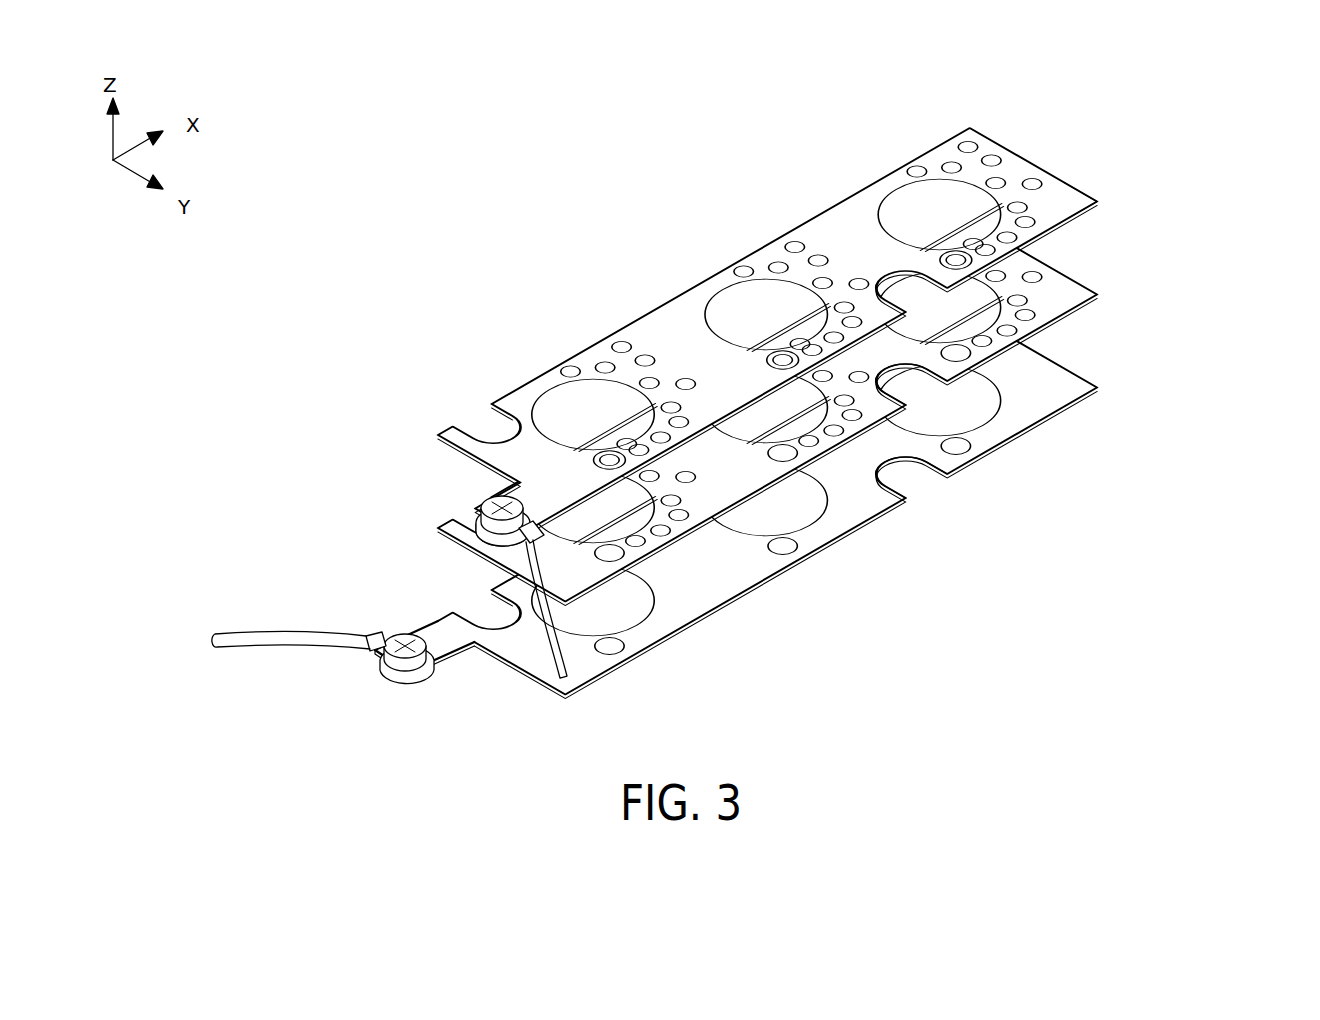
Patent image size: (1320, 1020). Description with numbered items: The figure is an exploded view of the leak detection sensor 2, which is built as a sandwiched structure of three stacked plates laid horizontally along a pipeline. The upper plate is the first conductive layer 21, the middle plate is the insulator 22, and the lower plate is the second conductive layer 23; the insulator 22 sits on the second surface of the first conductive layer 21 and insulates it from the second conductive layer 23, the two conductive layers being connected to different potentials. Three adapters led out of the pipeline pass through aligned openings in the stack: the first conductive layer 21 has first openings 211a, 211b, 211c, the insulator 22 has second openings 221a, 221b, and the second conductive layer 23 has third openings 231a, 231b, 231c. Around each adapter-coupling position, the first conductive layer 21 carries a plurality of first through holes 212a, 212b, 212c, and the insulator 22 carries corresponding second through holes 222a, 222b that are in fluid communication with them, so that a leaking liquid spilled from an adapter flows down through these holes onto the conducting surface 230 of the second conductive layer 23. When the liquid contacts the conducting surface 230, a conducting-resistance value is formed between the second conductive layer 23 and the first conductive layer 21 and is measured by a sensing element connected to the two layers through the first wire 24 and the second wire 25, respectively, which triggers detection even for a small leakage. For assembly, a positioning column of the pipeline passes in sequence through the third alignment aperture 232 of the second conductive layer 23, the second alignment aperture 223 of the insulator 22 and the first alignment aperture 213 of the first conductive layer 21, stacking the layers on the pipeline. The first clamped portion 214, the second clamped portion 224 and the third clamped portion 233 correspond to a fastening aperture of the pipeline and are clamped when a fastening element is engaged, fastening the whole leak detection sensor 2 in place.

The leak detection sensor 2 is at (1297, 84).
The first conductive layer 21 is at (838, 218).
The first opening 211a is at (565, 398).
The first opening 211b is at (725, 312).
The first opening 211c is at (905, 208).
The first through hole 212a is at (623, 345).
The first through hole 212b is at (793, 246).
The first through hole 212c is at (967, 140).
The first alignment aperture 213 is at (603, 462).
The first clamped portion 214 is at (1108, 217).
The insulator 22 is at (1100, 283).
The second opening 221a is at (684, 520).
The second opening 221b is at (823, 452).
The second through hole 222a is at (618, 432).
The second through hole 222b is at (975, 240).
The second alignment aperture 223 is at (478, 508).
The second clamped portion 224 is at (937, 395).
The second conductive layer 23 is at (1045, 402).
The third opening 231a is at (645, 602).
The third opening 231b is at (800, 512).
The third opening 231c is at (990, 397).
The third alignment aperture 232 is at (609, 655).
The third clamped portion 233 is at (920, 497).
The conducting surface 230 is at (520, 602).
The first wire 24 is at (518, 560).
The second wire 25 is at (272, 642).